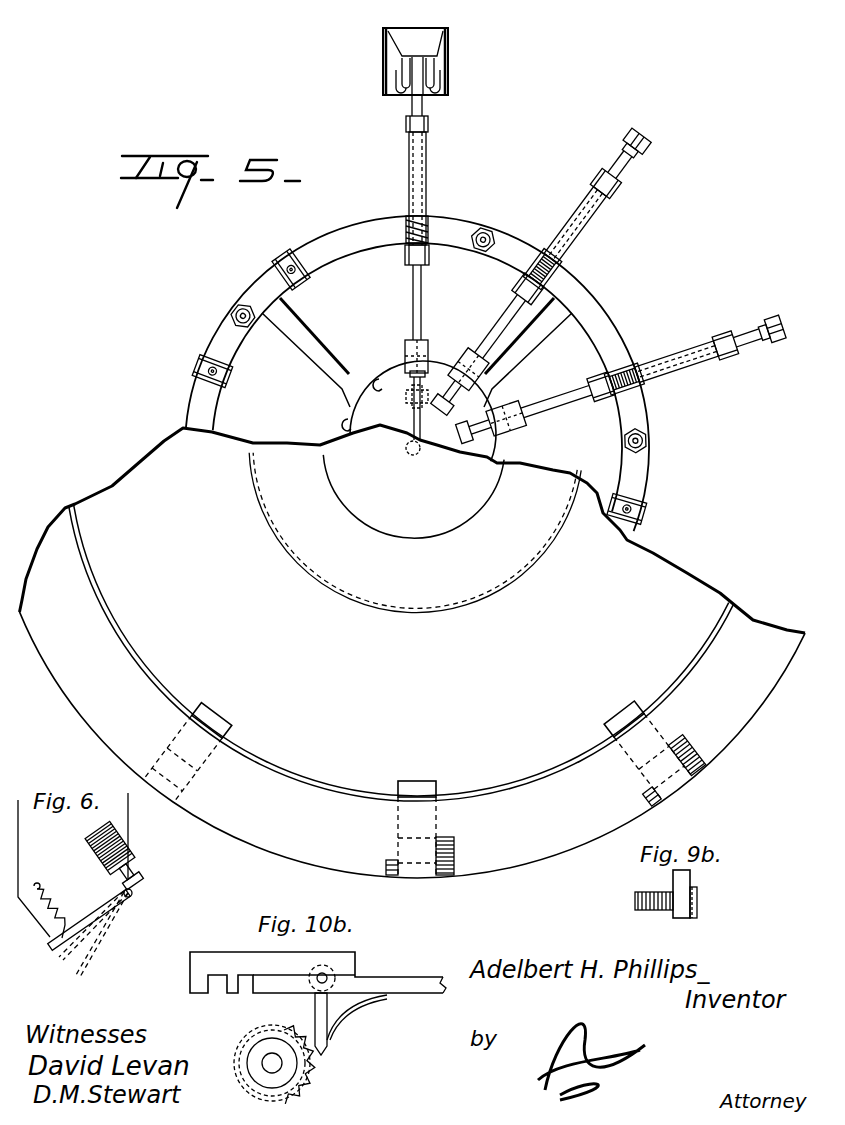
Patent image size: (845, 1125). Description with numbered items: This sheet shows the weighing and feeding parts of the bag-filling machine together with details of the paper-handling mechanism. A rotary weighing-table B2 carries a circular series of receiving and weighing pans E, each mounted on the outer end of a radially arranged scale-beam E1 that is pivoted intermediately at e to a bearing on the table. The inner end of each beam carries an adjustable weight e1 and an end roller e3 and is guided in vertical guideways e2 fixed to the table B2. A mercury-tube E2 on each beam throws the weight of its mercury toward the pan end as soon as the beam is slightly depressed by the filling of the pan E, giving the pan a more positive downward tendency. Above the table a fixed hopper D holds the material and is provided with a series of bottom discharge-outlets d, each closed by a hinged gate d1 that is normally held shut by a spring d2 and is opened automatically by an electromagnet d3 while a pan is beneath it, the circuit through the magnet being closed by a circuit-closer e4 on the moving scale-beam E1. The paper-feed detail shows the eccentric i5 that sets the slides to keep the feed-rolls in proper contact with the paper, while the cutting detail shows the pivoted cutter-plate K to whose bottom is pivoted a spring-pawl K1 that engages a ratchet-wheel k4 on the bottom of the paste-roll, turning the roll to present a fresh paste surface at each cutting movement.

In FIG. 5, the weighing-pan E is at (432, 67).
In FIG. 5, the scale-beam E1 is at (421, 107).
In FIG. 5, the mercury-tube E2 is at (425, 185).
In FIG. 5, the pivot e is at (216, 365).
In FIG. 5, the adjustable weight e1 is at (428, 348).
In FIG. 5, the vertical guideways e2 is at (369, 381).
In FIG. 5, the end roller e3 is at (462, 446).
In FIG. 5, the circuit-closer e4 is at (622, 160).
In FIG. 5, the rotary weighing-table B2 is at (602, 320).
In FIG. 5, the hopper D is at (413, 665).
In FIG. 5, the discharge-outlet d is at (180, 777).
In FIG. 6, the discharge-outlet d is at (96, 853).
In FIG. 6, the hinged gate d1 is at (55, 951).
In FIG. 5, the spring d2 is at (387, 866).
In FIG. 6, the spring d2 is at (40, 910).
In FIG. 5, the electromagnet d3 is at (454, 848).
In FIG. 6, the electromagnet d3 is at (138, 872).
In FIG. 10B, the cutter-plate K is at (383, 978).
In FIG. 10B, the spring-pawl K1 is at (315, 1000).
In FIG. 10B, the ratchet wheel k4 is at (313, 1077).
In FIG. 9B, the eccentric i5 is at (682, 918).